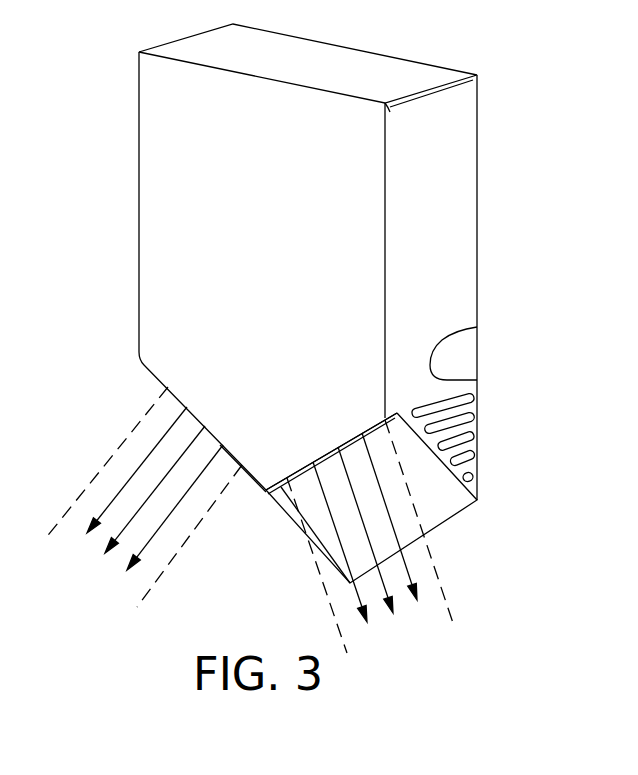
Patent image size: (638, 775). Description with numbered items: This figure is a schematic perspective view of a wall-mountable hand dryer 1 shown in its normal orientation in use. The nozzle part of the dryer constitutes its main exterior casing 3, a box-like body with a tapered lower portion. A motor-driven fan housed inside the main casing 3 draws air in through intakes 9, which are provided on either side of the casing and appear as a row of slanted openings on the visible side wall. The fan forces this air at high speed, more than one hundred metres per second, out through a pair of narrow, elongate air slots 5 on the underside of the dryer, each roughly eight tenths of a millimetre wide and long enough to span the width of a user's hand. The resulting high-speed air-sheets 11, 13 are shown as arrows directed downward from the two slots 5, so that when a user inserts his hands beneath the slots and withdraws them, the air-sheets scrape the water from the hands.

The wall-mountable hand dryer 1 is at (117, 75).
The main exterior casing 3 is at (463, 203).
The elongate air slots 5 is at (248, 478).
The intakes 9 is at (463, 422).
The high-speed air-sheet 11 is at (123, 443).
The high-speed air-sheet 13 is at (433, 568).